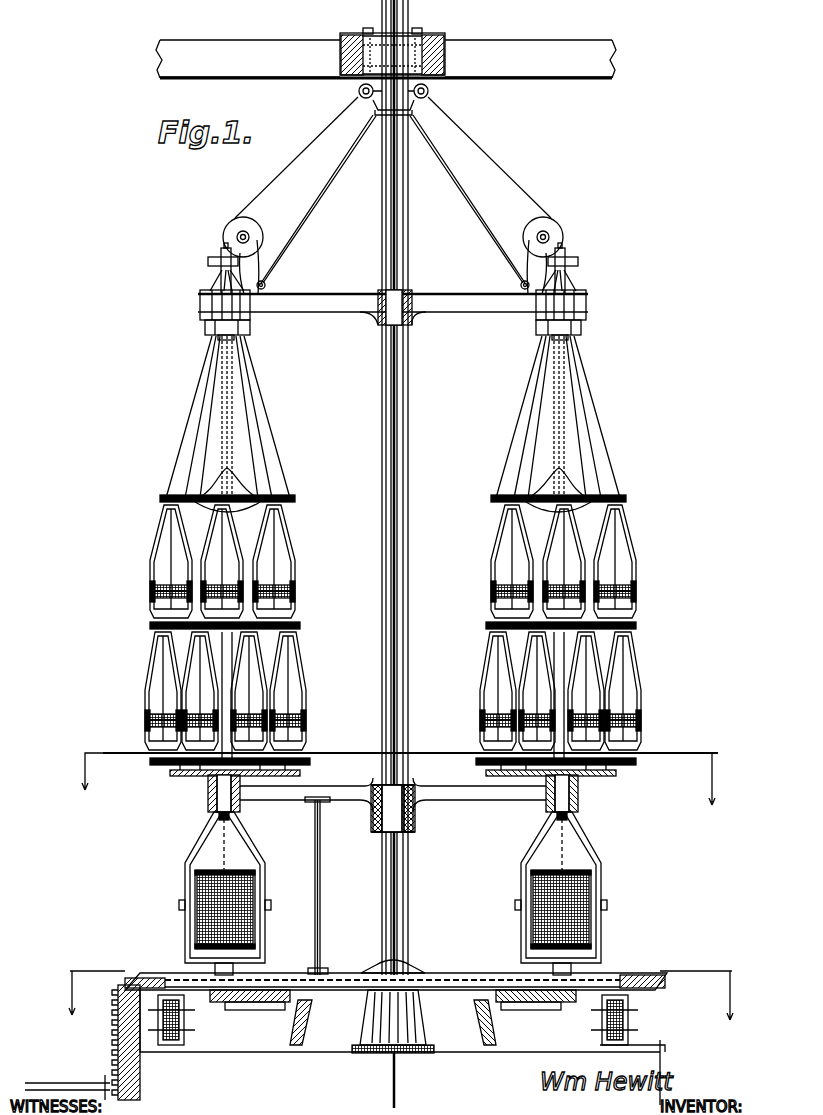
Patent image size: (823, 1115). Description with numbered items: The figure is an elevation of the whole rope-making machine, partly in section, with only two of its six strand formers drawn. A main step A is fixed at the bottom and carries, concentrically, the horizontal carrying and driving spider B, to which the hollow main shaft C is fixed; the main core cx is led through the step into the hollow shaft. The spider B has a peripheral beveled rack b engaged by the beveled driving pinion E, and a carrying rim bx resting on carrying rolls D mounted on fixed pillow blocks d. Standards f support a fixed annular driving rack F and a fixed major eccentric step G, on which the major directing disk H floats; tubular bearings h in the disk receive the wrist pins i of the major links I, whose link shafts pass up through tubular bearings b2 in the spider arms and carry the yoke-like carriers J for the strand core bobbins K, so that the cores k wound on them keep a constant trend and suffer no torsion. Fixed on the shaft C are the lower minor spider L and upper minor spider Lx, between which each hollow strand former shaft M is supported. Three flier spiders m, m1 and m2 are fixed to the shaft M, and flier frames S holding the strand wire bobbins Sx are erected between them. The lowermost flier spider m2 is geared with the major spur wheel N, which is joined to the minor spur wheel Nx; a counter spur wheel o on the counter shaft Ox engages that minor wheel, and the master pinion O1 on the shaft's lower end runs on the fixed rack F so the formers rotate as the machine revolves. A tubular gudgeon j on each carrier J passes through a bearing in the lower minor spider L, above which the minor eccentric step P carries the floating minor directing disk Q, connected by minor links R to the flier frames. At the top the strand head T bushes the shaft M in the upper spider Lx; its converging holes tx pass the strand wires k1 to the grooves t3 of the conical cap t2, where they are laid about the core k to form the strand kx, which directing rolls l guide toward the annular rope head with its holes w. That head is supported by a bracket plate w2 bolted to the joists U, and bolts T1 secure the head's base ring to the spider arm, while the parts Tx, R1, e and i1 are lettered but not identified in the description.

The main shaft C is at (401, 487).
The joists U is at (395, 59).
The holes of the rope head w is at (395, 50).
The bracket plate w2 is at (350, 30).
The conical cap t2 is at (437, 95).
The vertical grooves of the cap t3 is at (393, 199).
The strand kx is at (565, 205).
The wrist pins of major links i is at (393, 254).
The directing rolls l is at (562, 222).
The converging holes of strand head tx is at (393, 266).
The pulley bracket Tx is at (208, 262).
The bolts of base ring T1 is at (580, 282).
The upper minor spider Lx is at (352, 308).
The strand head T is at (200, 307).
The strand wires k1 is at (618, 420).
The strand former shaft M is at (581, 440).
The uppermost flier spider m is at (404, 499).
The flier frames S is at (628, 683).
The strand wire bobbins Sx is at (620, 710).
The middle flier spider m1 is at (403, 622).
The major spur wheel N is at (399, 768).
The lowermost flier spider m2 is at (636, 758).
The minor spur wheel Nx is at (436, 784).
The minor links R is at (305, 770).
The ring R1 is at (488, 774).
The minor directing disk Q is at (655, 774).
The minor eccentric step P is at (404, 791).
The hub e is at (208, 798).
The lower minor spider L is at (495, 800).
The counter spur wheel o is at (305, 780).
The hub i1 is at (582, 794).
The tubular gudgeon j is at (386, 841).
The strand core k is at (402, 856).
The carrier of strand core bobbin J is at (384, 893).
The strand core bobbins K is at (393, 912).
The counter shaft Ox is at (325, 886).
The master pinion O1 is at (296, 985).
The carrying and driving spider B is at (270, 978).
The peripheral beveled rack b is at (670, 995).
The peripheral carrying rim bx is at (405, 952).
The tubular bearings of spider arms b2 is at (585, 960).
The pillow blocks d is at (402, 1047).
The beveled driving pinion E is at (82, 1042).
The carrying rolls D is at (408, 1014).
The tubular bearings of directing disk h is at (394, 1018).
The major links I is at (381, 1016).
The major directing disk H is at (415, 1024).
The major eccentric step G is at (413, 1024).
The annular driving rack F is at (573, 998).
The standards f is at (432, 1022).
The main step A is at (393, 1006).
The main core cx is at (386, 1080).